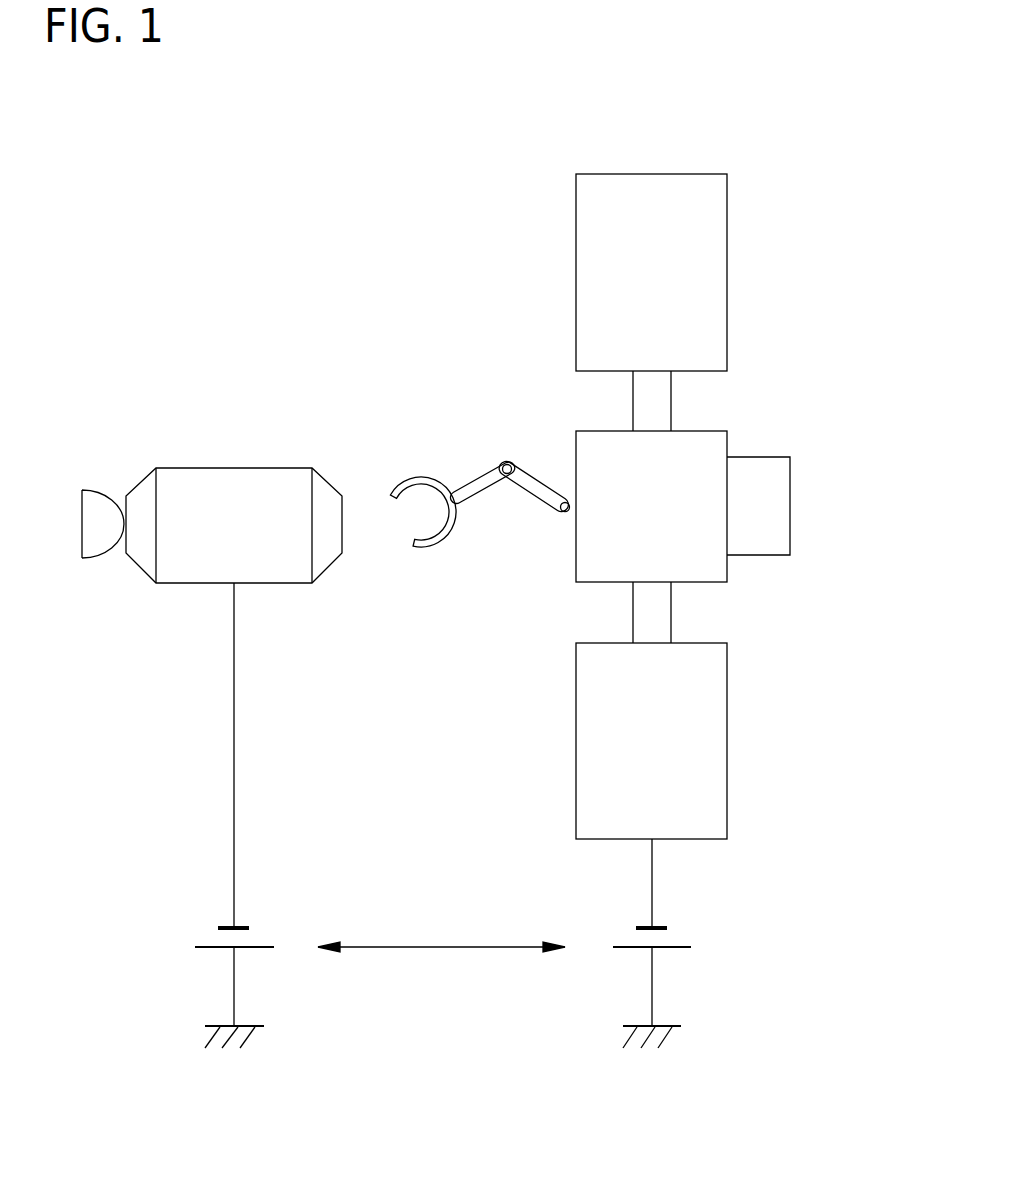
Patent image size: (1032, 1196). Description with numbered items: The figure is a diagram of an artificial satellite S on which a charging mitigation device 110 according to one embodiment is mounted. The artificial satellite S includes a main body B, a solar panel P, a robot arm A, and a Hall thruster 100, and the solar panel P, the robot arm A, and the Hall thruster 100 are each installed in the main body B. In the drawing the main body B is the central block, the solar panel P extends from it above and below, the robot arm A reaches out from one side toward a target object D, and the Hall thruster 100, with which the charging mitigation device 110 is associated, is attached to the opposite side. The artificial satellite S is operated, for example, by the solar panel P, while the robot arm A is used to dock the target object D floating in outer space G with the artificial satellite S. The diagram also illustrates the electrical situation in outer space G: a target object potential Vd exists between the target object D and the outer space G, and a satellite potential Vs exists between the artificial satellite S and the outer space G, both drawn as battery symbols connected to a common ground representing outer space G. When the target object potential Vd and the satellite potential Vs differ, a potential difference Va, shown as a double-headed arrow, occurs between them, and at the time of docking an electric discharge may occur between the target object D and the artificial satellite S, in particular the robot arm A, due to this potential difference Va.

The artificial satellite S is at (655, 442).
The solar panel P is at (693, 272).
The main body B is at (601, 464).
The robot arm A is at (462, 490).
The Hall thruster 100 is at (764, 505).
The charging mitigation device 110 is at (823, 506).
The target object D is at (229, 452).
The target object potential Vd is at (215, 939).
The satellite potential Vs is at (672, 939).
The potential difference Va is at (441, 934).
The outer space G is at (663, 1025).